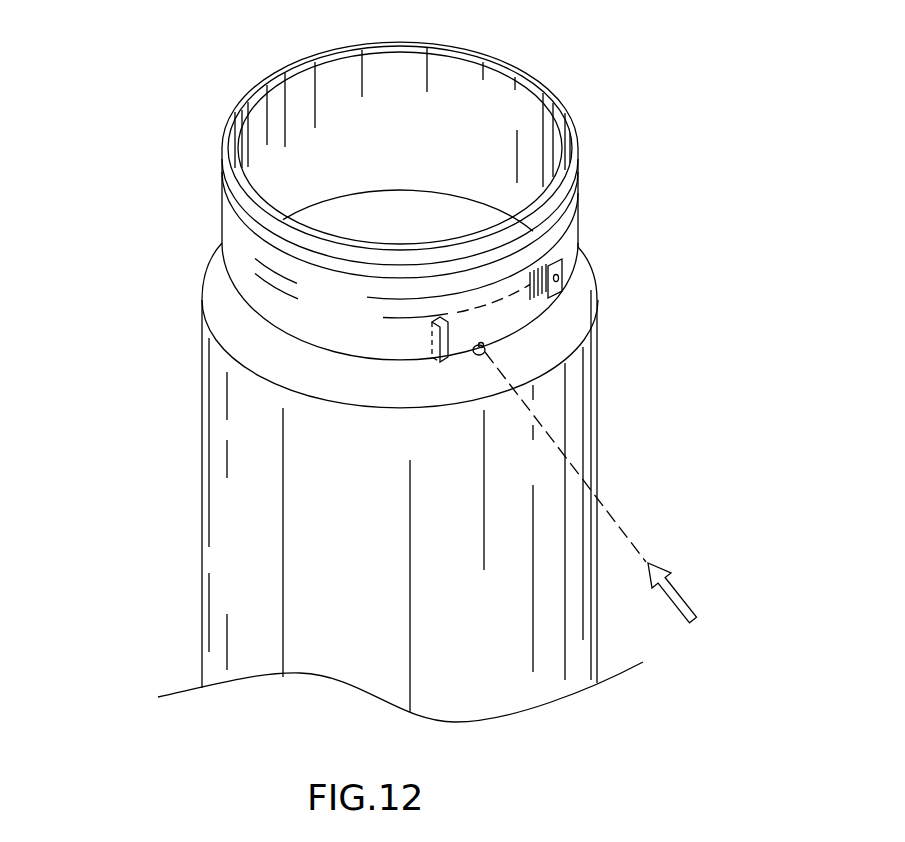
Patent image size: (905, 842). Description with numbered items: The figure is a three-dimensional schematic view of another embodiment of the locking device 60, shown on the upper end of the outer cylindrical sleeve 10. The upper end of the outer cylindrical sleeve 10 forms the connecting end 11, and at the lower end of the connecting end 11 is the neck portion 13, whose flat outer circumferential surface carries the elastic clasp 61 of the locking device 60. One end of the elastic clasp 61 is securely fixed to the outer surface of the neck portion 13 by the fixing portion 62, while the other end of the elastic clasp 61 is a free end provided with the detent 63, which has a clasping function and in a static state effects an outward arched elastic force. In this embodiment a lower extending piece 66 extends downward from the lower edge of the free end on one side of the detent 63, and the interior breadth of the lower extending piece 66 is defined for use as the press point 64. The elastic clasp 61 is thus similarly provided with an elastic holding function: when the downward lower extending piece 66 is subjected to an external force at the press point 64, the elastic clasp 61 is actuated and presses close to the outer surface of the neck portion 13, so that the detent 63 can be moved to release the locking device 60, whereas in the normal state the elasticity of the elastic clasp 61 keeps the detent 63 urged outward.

The outer cylindrical sleeve 10 is at (163, 358).
The connecting end 11 is at (203, 168).
The neck portion 13 is at (565, 276).
The locking device 60 is at (642, 292).
The elastic clasp 61 is at (516, 318).
The fixing portion 62 is at (573, 262).
The detent 63 is at (432, 360).
The press point 64 is at (480, 343).
The lower extending piece 66 is at (478, 351).